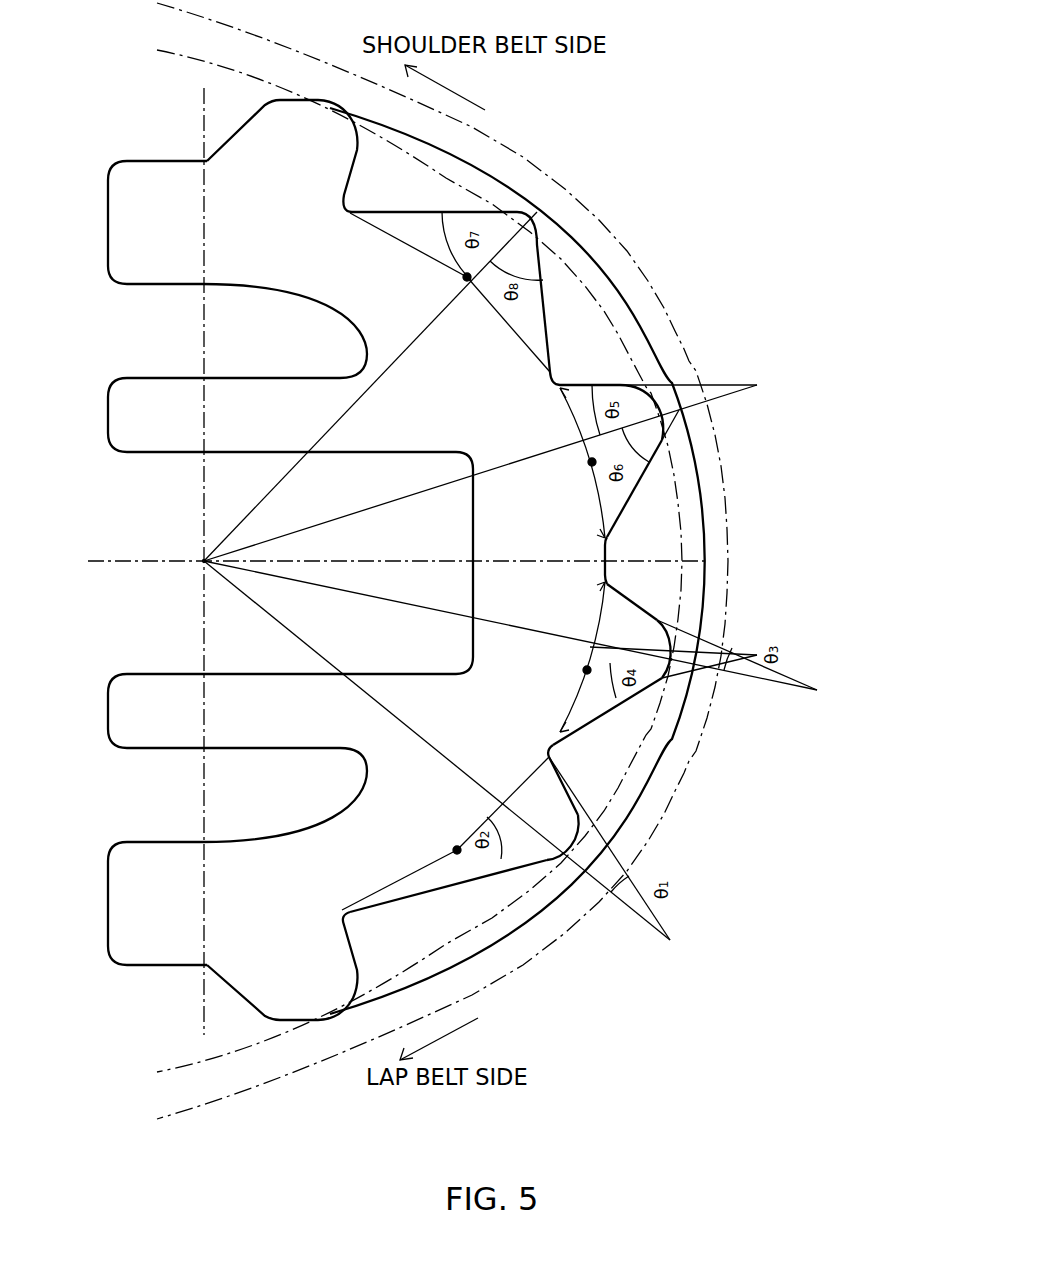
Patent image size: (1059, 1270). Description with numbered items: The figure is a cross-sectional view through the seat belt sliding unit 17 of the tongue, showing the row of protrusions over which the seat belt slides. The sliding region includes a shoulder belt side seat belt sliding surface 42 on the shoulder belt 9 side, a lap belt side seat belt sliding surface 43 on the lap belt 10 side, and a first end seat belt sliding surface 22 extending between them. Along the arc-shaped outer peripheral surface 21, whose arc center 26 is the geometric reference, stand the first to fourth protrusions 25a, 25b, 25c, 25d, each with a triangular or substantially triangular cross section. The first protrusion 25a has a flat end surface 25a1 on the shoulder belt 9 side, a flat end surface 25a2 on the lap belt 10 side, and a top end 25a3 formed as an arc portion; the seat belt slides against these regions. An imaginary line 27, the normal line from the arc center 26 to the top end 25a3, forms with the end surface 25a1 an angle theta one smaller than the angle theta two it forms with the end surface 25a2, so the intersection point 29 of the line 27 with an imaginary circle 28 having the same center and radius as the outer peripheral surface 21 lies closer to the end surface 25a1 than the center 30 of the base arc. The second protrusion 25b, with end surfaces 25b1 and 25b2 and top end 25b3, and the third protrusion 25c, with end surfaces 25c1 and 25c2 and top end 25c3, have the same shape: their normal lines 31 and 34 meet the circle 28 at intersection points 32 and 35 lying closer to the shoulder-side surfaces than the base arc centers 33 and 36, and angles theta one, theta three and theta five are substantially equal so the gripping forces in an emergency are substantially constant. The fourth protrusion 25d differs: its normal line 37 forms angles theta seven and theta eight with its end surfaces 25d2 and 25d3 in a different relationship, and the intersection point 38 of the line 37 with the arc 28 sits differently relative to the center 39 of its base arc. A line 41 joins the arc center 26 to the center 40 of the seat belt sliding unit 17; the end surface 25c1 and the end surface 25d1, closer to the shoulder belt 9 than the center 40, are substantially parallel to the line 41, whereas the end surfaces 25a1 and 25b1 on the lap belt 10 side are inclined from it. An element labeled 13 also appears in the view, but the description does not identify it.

The shoulder belt 9 is at (197, 60).
The lap belt 10 is at (197, 1062).
The locking base 13 is at (162, 262).
The seat belt sliding unit 17 is at (700, 476).
The outer peripheral surface 21 is at (610, 556).
The first end seat belt sliding surface 22 is at (710, 500).
The first protrusion 25a is at (520, 852).
The end surface 25a1 is at (561, 769).
The end surface 25a2 is at (460, 887).
The top end 25a3 is at (580, 828).
The second protrusion 25b is at (685, 661).
The end surface 25b1 is at (625, 598).
The end surface 25b2 is at (586, 725).
The top end 25b3 is at (680, 650).
The third protrusion 25c is at (653, 428).
The end surface 25c1 is at (610, 383).
The end surface 25c2 is at (636, 485).
The top end 25c3 is at (665, 405).
The fourth protrusion 25d is at (501, 263).
The end surface 25d1 is at (413, 212).
The end surface 25d2 is at (546, 315).
The end surface 25d3 is at (535, 235).
The arc center 26 is at (204, 561).
The imaginary line 27 is at (412, 722).
The imaginary circle 28 is at (413, 880).
The intersection point 29 is at (510, 803).
The center 30 is at (455, 849).
The imaginary line 31 is at (500, 624).
The intersection point 32 is at (597, 644).
The center 33 is at (584, 670).
The imaginary line 34 is at (498, 468).
The intersection point 35 is at (580, 438).
The center 36 is at (589, 463).
The imaginary line 37 is at (381, 376).
The intersection point 38 is at (485, 296).
The center 39 is at (463, 278).
The center 40 is at (708, 555).
The line 41 is at (410, 558).
The shoulder belt side seat belt sliding surface 42 is at (322, 100).
The lap belt side seat belt sliding surface 43 is at (310, 1022).